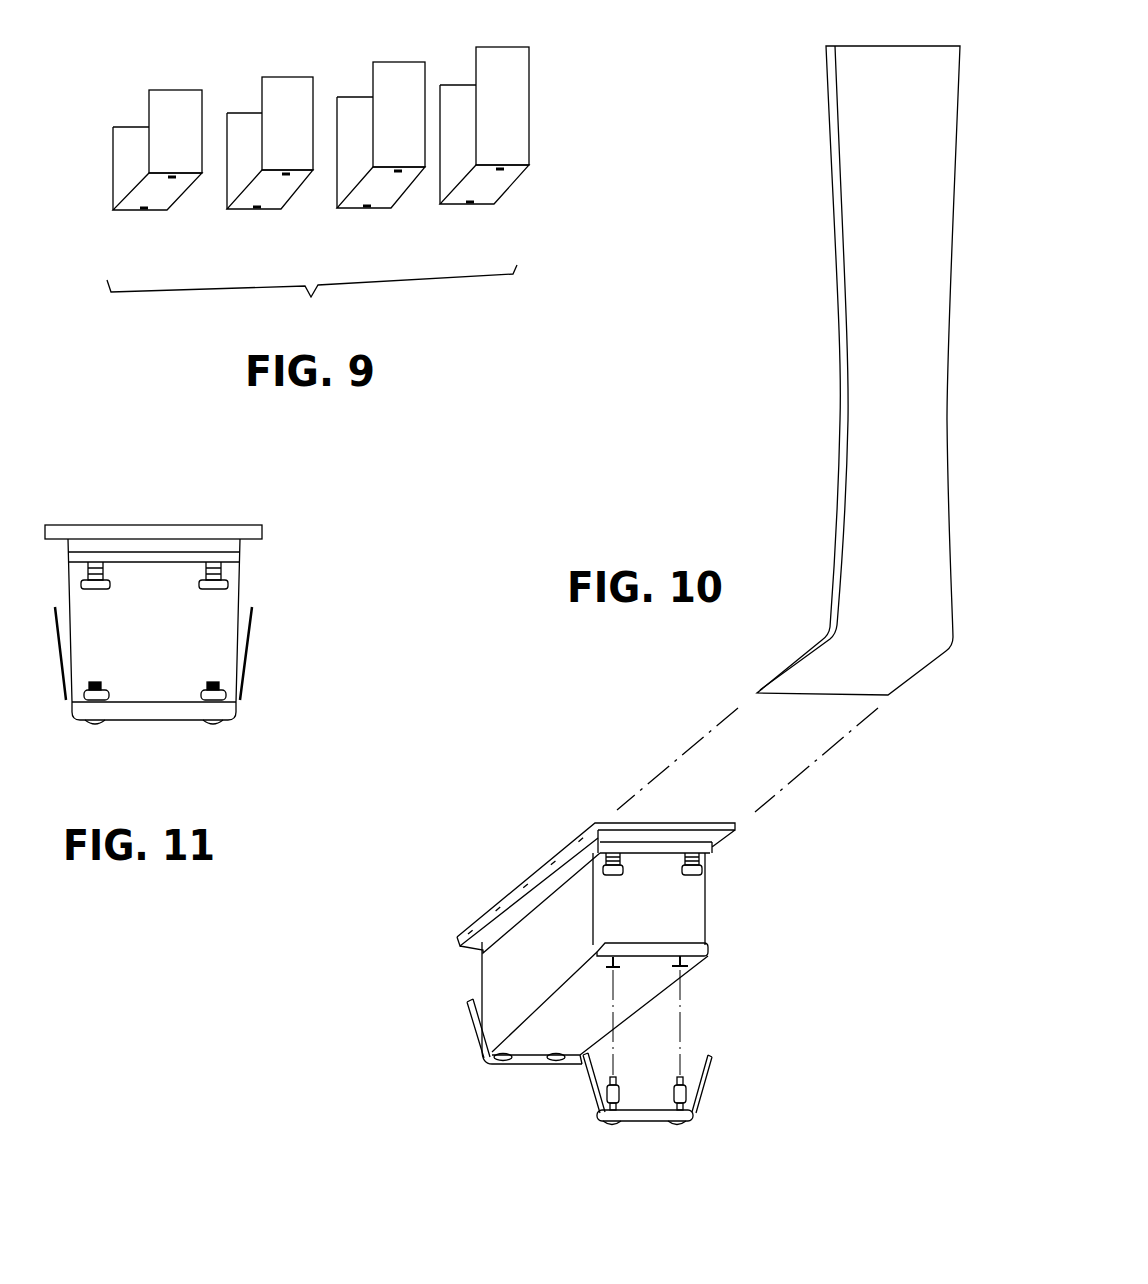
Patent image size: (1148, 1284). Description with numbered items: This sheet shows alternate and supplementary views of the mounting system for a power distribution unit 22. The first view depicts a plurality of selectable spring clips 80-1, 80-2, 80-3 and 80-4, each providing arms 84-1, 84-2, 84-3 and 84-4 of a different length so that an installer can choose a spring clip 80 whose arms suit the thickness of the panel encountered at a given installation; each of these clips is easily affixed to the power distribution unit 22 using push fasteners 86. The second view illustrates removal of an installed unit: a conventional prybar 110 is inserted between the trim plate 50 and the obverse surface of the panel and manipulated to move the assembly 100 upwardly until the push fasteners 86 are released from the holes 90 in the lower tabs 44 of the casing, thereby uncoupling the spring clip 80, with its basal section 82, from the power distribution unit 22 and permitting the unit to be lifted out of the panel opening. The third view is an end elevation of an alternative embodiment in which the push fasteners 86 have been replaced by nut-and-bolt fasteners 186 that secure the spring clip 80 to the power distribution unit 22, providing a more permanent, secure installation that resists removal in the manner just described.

In FIG. 9, the arms 84-1 is at (181, 105).
In FIG. 9, the arms 84-2 is at (288, 88).
In FIG. 9, the arms 84-3 is at (400, 78).
In FIG. 9, the arms 84-4 is at (508, 65).
In FIG. 9, the spring clip 80-1 is at (157, 197).
In FIG. 9, the spring clip 80-2 is at (270, 197).
In FIG. 9, the spring clip 80-3 is at (390, 192).
In FIG. 9, the spring clip 80-4 is at (498, 183).
In FIG. 11, the spring clip 80 is at (162, 725).
In FIG. 10, the spring clip 80 is at (633, 1123).
In FIG. 10, the basal section 82 is at (657, 1124).
In FIG. 10, the push fasteners 86 is at (607, 1094).
In FIG. 10, the holes 90 is at (607, 967).
In FIG. 10, the lower tab 44 is at (660, 948).
In FIG. 10, the trim plate 50 is at (594, 822).
In FIG. 10, the assembly 100 is at (478, 972).
In FIG. 11, the power distribution unit 22 is at (246, 580).
In FIG. 10, the power distribution unit 22 is at (503, 998).
In FIG. 10, the prybar 110 is at (838, 413).
In FIG. 11, the nut-and-bolt fasteners 186 is at (203, 686).